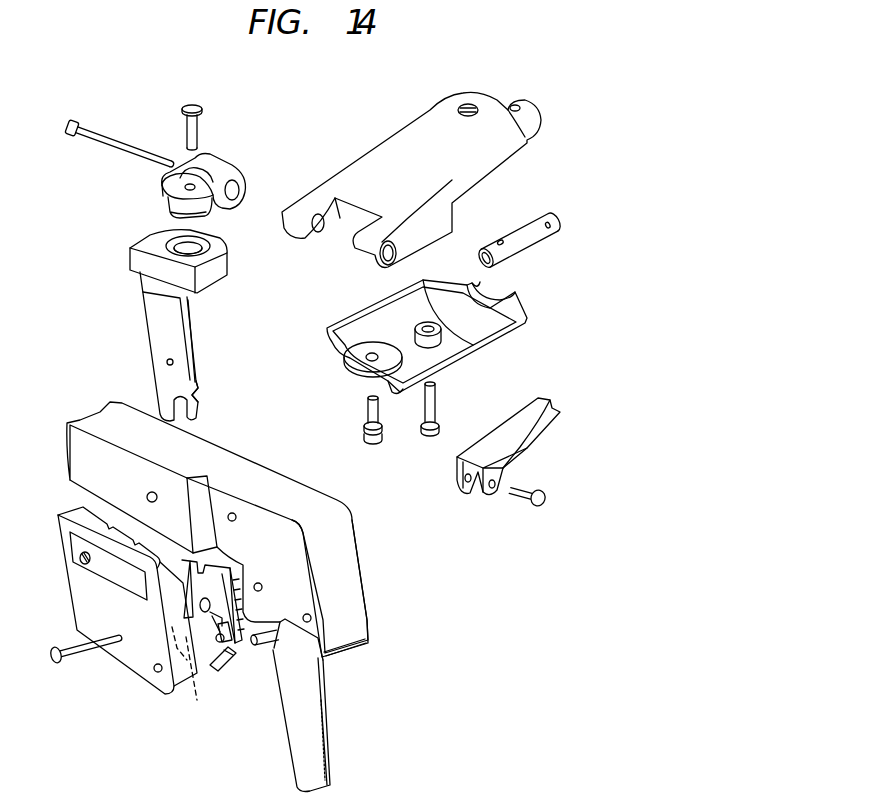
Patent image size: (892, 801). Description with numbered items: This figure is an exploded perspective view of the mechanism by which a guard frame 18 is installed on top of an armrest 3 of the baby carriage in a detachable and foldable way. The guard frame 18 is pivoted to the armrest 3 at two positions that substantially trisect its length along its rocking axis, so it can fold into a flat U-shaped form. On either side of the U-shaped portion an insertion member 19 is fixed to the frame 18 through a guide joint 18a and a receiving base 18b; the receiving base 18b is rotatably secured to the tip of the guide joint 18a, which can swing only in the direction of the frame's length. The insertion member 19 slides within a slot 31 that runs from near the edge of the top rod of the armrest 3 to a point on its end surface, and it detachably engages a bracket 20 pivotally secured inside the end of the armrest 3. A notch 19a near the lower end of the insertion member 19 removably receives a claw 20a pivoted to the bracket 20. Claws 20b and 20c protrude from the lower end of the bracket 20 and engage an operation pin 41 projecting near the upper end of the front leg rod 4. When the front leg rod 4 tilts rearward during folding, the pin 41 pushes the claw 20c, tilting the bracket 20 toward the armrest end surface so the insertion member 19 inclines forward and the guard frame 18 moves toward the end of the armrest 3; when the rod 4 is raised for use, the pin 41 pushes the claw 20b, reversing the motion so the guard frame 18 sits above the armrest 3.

The armrest 3 is at (257, 478).
The front leg rod 4 is at (305, 724).
The guard frame 18 is at (405, 138).
The guide joint 18a is at (206, 167).
The receiving base 18b is at (216, 273).
The insertion member 19 is at (178, 328).
The notch 19a is at (199, 391).
The bracket 20 is at (197, 585).
The claw 20a is at (222, 582).
The claw 20b is at (232, 655).
The claw 20c is at (197, 676).
The slot 31 is at (306, 559).
The operation pin 41 is at (268, 644).